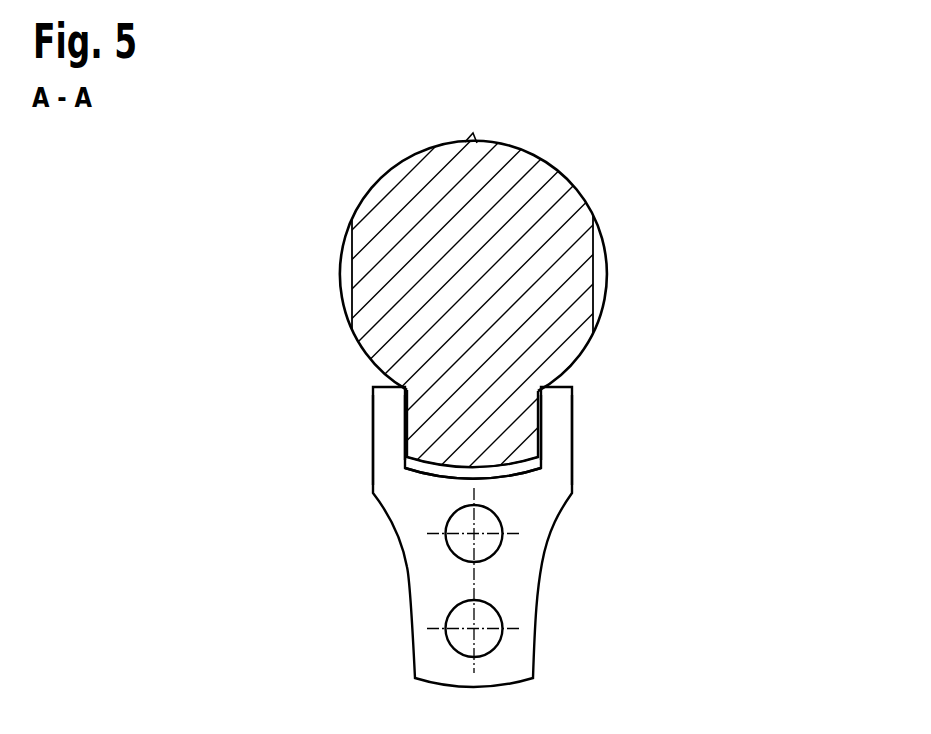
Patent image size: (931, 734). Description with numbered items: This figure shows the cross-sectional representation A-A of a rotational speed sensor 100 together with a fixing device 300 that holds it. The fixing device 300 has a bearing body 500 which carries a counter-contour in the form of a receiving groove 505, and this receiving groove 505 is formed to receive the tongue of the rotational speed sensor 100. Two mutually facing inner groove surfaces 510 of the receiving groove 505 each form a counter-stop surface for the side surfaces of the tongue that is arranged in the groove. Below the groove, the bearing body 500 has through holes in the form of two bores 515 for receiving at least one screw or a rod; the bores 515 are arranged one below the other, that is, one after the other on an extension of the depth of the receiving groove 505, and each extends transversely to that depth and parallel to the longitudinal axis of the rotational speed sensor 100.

The rotational speed sensor 100 is at (692, 111).
The fixing device 300 is at (479, 537).
The bearing body 500 is at (520, 655).
The receiving groove 505 is at (522, 489).
The inner groove surfaces 510 is at (388, 423).
The bores 515 is at (462, 543).